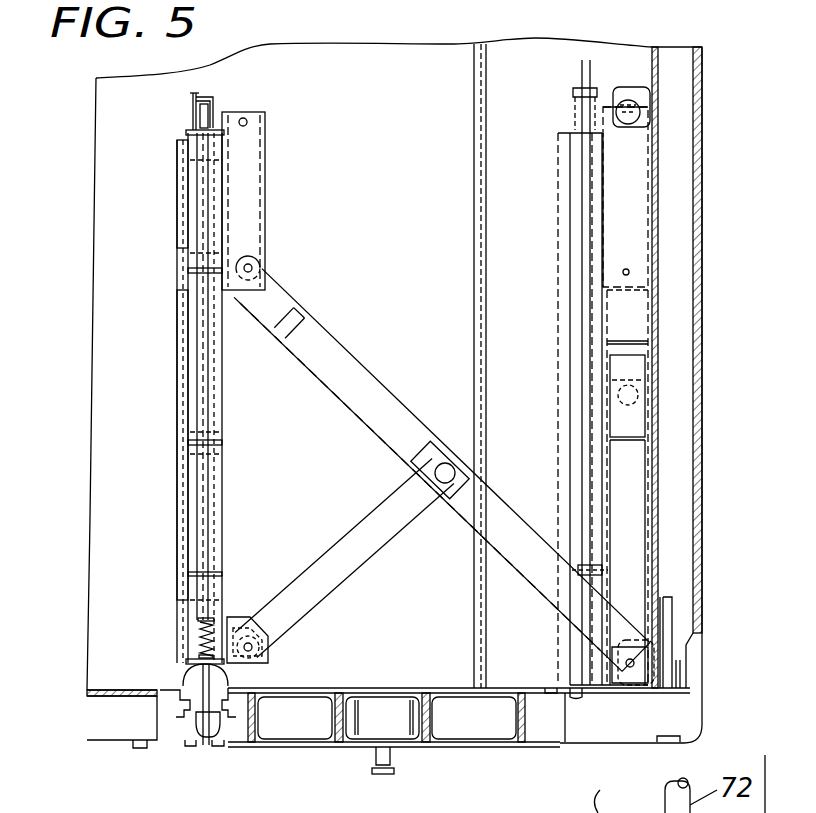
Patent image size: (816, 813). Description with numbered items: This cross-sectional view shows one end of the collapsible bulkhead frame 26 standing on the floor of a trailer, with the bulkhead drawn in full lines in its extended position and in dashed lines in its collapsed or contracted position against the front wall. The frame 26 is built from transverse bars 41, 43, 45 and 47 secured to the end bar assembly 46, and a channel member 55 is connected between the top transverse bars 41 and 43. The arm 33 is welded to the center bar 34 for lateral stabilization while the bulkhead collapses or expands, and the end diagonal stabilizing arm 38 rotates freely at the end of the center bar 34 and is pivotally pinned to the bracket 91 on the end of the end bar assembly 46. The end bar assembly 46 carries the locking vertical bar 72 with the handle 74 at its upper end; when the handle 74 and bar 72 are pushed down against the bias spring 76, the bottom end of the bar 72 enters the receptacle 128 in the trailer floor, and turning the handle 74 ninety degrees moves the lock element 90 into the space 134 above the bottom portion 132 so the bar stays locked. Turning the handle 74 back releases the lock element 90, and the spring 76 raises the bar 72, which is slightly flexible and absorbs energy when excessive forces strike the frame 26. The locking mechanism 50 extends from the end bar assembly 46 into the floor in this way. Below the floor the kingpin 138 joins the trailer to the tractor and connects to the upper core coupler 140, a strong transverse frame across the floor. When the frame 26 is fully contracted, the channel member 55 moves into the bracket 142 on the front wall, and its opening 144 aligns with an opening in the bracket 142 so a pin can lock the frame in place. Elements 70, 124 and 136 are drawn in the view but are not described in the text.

The frame 26 is at (703, 408).
The arm 33 is at (358, 367).
The center bar 34 is at (444, 465).
The end diagonal stabilizing arm 38 is at (385, 530).
The transverse bar 41 is at (192, 140).
The transverse bar 43 is at (190, 267).
The transverse bar 45 is at (196, 435).
The end bar assembly 46 is at (227, 509).
The transverse bar 47 is at (197, 610).
The locking mechanism 50 is at (178, 668).
The channel member 55 is at (248, 168).
The lower pivot 70 is at (222, 678).
The locking vertical bar 72 is at (205, 392).
The handle 74 is at (188, 101).
The bias spring 76 is at (198, 640).
The lock element 90 is at (192, 720).
The bracket 91 is at (238, 635).
The lower pivot bracket 124 is at (573, 647).
The receptacle 128 is at (231, 716).
The bottom portion 132 is at (195, 746).
The space 134 is at (209, 742).
The base rail end 136 is at (146, 748).
The kingpin 138 is at (392, 755).
The upper core coupler 140 is at (374, 714).
The bracket 142 is at (250, 225).
The opening 144 is at (246, 120).